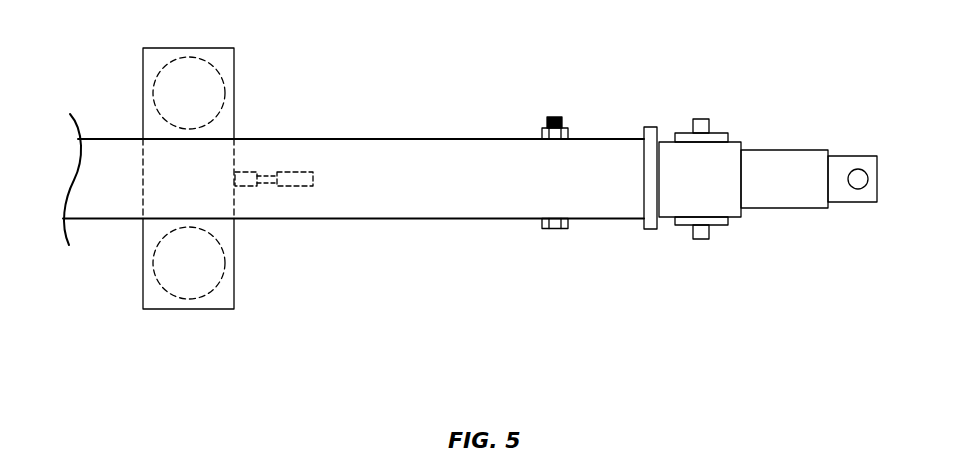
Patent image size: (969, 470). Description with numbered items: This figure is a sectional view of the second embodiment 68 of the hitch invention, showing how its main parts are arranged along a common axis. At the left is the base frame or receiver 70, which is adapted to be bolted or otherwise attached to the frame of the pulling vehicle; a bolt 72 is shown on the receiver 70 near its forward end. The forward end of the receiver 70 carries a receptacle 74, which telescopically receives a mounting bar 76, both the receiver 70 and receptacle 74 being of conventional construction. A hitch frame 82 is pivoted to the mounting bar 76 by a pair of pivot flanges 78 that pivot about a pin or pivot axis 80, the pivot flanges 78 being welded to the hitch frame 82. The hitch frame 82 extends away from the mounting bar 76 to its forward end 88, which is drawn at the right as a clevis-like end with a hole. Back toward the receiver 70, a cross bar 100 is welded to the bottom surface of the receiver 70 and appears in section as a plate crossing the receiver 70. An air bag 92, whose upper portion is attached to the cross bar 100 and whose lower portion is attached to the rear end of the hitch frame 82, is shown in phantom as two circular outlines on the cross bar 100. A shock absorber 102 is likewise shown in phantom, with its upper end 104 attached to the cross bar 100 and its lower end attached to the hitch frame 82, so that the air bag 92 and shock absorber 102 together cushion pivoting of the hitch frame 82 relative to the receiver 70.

The second embodiment 68 is at (465, 158).
The base frame or receiver 70 is at (620, 195).
The bolt 72 is at (565, 128).
The receptacle 74 is at (663, 133).
The mounting bar 76 is at (708, 193).
The pivot flanges 78 is at (722, 133).
The pin or pivot axis 80 is at (703, 120).
The hitch frame 82 is at (800, 208).
The forward end 88 is at (795, 158).
The air bag 92 is at (153, 94).
The cross bar 100 is at (222, 55).
The shock absorber 102 is at (295, 172).
The upper end 104 is at (247, 172).